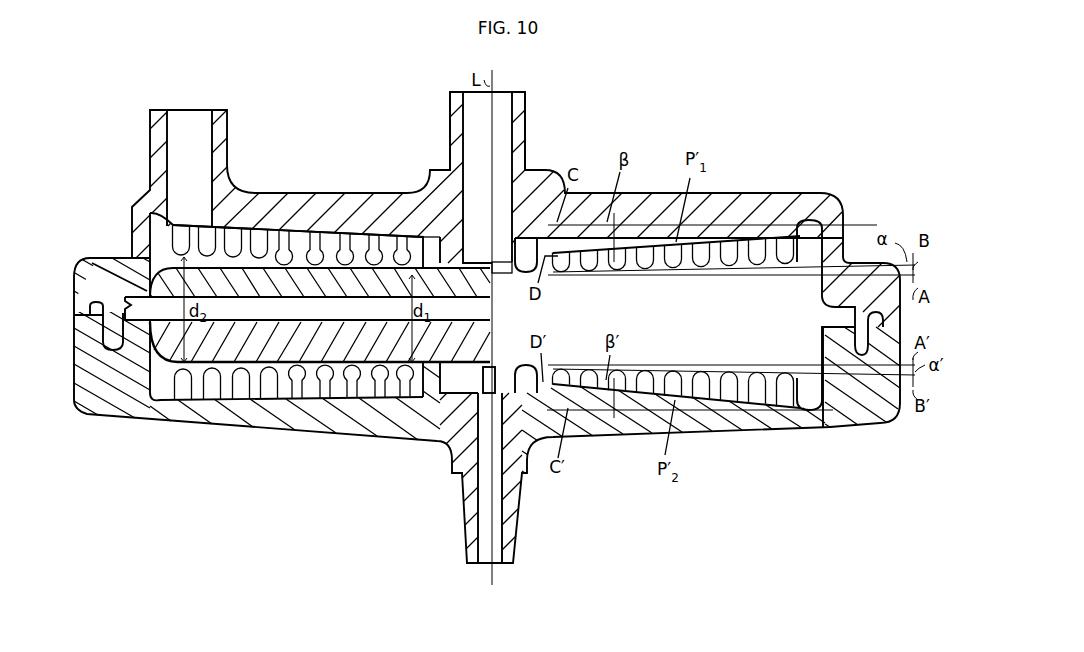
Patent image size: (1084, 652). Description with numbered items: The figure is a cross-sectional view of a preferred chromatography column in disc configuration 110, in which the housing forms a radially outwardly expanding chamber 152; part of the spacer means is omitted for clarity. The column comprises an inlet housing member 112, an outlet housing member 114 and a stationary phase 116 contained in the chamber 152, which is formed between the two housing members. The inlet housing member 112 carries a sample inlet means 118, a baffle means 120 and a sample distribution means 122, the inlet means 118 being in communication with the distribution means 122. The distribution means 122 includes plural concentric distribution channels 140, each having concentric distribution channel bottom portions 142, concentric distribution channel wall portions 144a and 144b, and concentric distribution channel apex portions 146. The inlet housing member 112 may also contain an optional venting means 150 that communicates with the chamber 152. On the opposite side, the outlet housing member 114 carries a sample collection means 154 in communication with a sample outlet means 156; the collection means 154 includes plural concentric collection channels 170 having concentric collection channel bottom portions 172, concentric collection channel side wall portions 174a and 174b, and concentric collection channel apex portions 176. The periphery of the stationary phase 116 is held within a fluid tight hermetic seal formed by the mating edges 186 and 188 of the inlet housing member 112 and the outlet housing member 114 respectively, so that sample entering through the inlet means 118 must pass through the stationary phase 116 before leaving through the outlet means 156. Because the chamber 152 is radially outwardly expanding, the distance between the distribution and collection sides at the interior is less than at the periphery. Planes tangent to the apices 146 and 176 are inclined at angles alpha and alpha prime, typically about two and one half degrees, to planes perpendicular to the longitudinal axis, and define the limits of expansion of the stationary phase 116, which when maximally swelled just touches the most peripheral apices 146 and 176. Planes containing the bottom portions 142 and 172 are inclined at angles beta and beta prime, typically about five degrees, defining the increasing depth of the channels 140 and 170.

The column in disc configuration 110 is at (430, 452).
The inlet housing member 112 is at (538, 212).
The outlet housing member 114 is at (596, 432).
The stationary phase 116 is at (395, 256).
The sample inlet means 118 is at (508, 107).
The baffle means 120 is at (496, 253).
The sample distribution means 122 is at (383, 286).
The concentric distribution channels 140 is at (357, 238).
The concentric distribution channel bottom portions 142 is at (287, 248).
The concentric distribution channel wall portion 144a is at (270, 252).
The concentric distribution channel wall portion 144b is at (316, 244).
The concentric distribution channel apex portions 146 is at (240, 254).
The venting means 150 is at (200, 122).
The chamber 152 is at (158, 232).
The sample collection means 154 is at (402, 392).
The sample outlet means 156 is at (482, 556).
The concentric collection channels 170 is at (368, 394).
The concentric collection channel bottom portions 172 is at (317, 394).
The concentric collection channel side wall portion 174a is at (246, 392).
The concentric collection channel side wall portion 174b is at (270, 392).
The concentric collection channel apex portions 176 is at (210, 386).
The mating edge of the inlet housing member 186 is at (110, 262).
The mating edge of the outlet housing member 188 is at (88, 415).